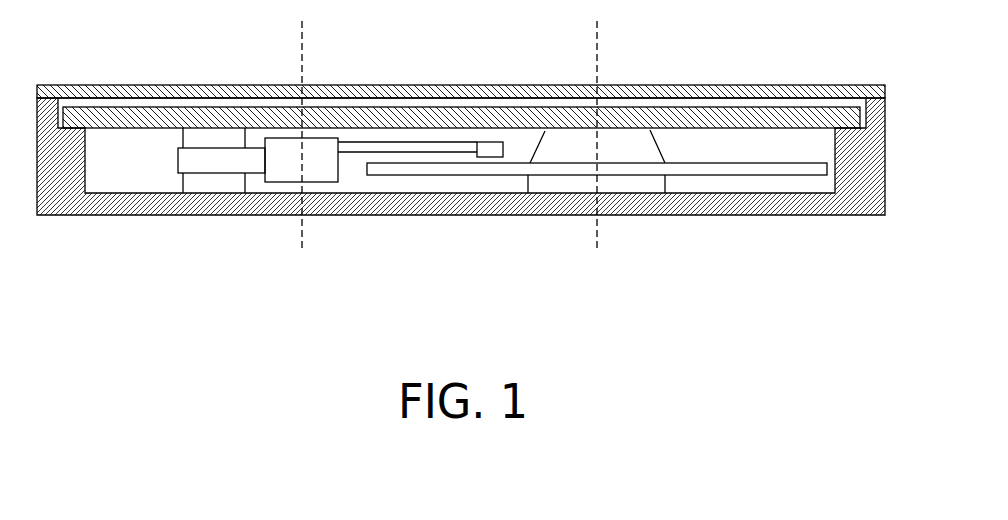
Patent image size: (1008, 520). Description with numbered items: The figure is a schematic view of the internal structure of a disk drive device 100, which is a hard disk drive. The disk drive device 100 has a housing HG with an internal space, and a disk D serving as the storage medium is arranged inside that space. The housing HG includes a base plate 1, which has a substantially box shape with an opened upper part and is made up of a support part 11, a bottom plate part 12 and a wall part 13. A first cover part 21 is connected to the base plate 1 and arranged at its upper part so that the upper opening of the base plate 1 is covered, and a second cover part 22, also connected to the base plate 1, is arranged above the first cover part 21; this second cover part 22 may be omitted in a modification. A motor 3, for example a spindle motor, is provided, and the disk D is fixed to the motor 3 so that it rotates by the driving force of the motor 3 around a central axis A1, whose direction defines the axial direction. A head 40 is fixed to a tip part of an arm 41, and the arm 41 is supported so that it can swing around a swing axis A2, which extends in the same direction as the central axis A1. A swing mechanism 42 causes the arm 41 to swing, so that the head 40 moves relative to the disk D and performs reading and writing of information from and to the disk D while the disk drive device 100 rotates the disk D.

The disk drive device 100 is at (127, 64).
The housing HG is at (833, 85).
The second cover part 22 is at (801, 90).
The wall part 13 is at (862, 176).
The first cover part 21 is at (748, 117).
The base plate 1 is at (877, 285).
The bottom plate part 12 is at (737, 201).
The support part 11 is at (630, 201).
The motor 3 is at (622, 143).
The disk D is at (699, 168).
The arm 41 is at (402, 148).
The head 40 is at (486, 148).
The swing mechanism 42 is at (216, 147).
The swing axis A2 is at (301, 126).
The central axis A1 is at (597, 126).